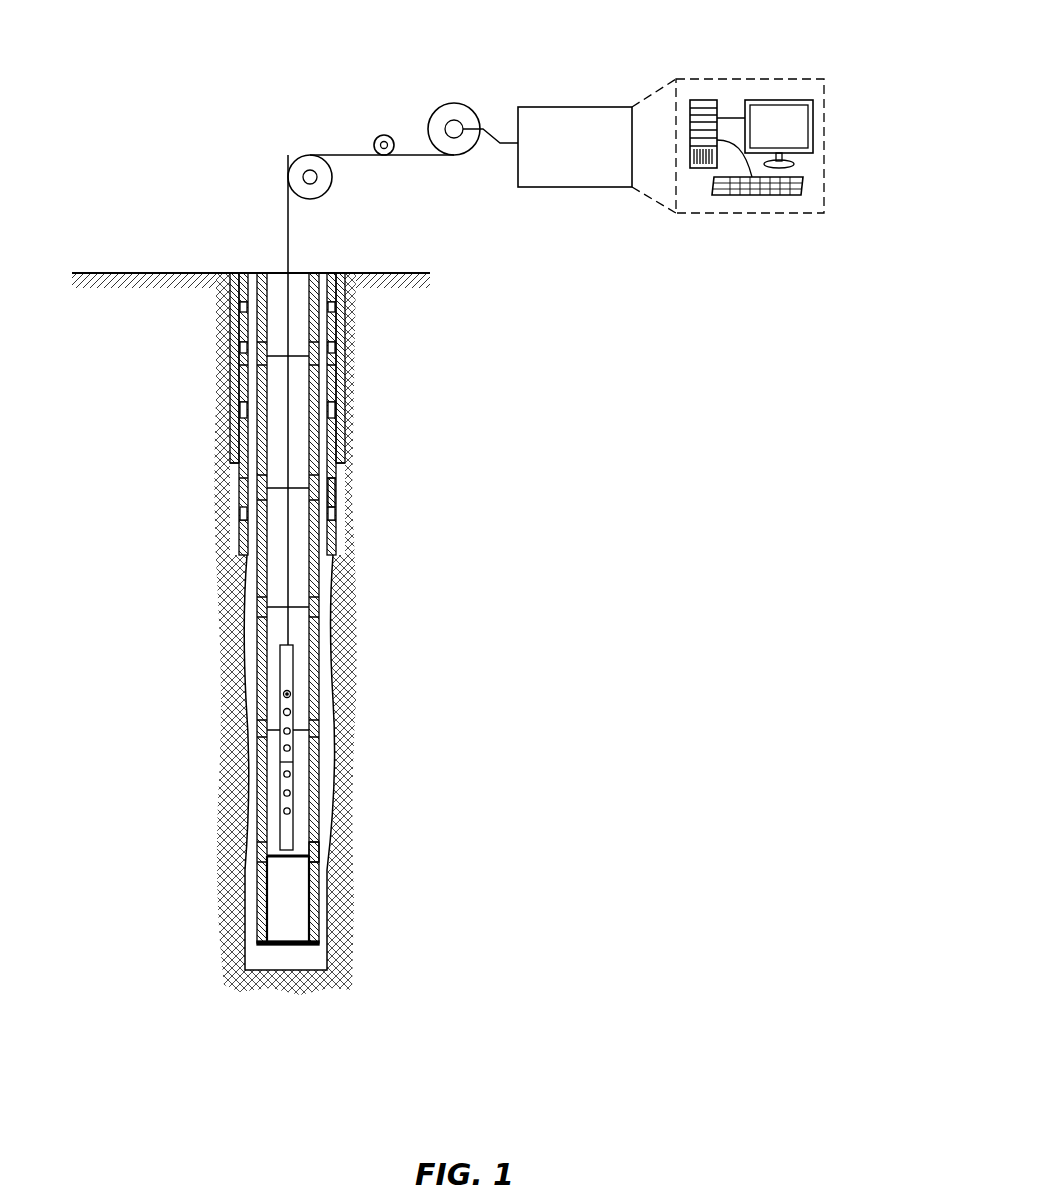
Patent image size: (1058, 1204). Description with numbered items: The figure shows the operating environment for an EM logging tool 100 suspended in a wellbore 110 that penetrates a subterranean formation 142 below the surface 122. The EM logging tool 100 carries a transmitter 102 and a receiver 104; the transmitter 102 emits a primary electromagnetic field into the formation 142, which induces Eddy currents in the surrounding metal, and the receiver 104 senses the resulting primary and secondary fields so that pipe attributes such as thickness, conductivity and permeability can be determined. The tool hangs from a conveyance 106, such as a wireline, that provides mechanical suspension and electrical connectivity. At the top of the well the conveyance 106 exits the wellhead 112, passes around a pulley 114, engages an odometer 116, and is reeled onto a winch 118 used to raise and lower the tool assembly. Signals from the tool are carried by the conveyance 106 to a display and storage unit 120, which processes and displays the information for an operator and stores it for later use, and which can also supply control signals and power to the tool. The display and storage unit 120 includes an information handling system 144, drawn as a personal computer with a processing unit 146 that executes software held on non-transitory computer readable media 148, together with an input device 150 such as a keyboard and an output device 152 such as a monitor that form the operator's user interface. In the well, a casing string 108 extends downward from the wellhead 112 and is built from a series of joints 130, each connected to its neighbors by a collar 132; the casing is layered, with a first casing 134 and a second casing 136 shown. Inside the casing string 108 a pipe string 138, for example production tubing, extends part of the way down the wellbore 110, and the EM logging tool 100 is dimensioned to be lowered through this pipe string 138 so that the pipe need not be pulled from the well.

The EM logging tool 100 is at (285, 840).
The transmitter 102 is at (292, 694).
The receiver 104 is at (305, 720).
The conveyance 106 is at (288, 238).
The casing string 108 is at (222, 456).
The wellbore 110 is at (330, 560).
The wellhead 112 is at (277, 262).
The pulley 114 is at (290, 170).
The odometer 116 is at (386, 135).
The winch 118 is at (460, 106).
The display and storage unit 120 is at (575, 107).
The surface 122 is at (103, 272).
The joint 130 is at (240, 284).
The collar 132 is at (240, 312).
The first casing 134 is at (338, 486).
The second casing 136 is at (340, 450).
The pipe string 138 is at (320, 908).
The subterranean formation 142 is at (532, 545).
The information handling system 144 is at (738, 79).
The processing unit 146 is at (703, 180).
The non-transitory computer readable media 148 is at (700, 100).
The input device 150 is at (752, 196).
The output device 152 is at (780, 100).